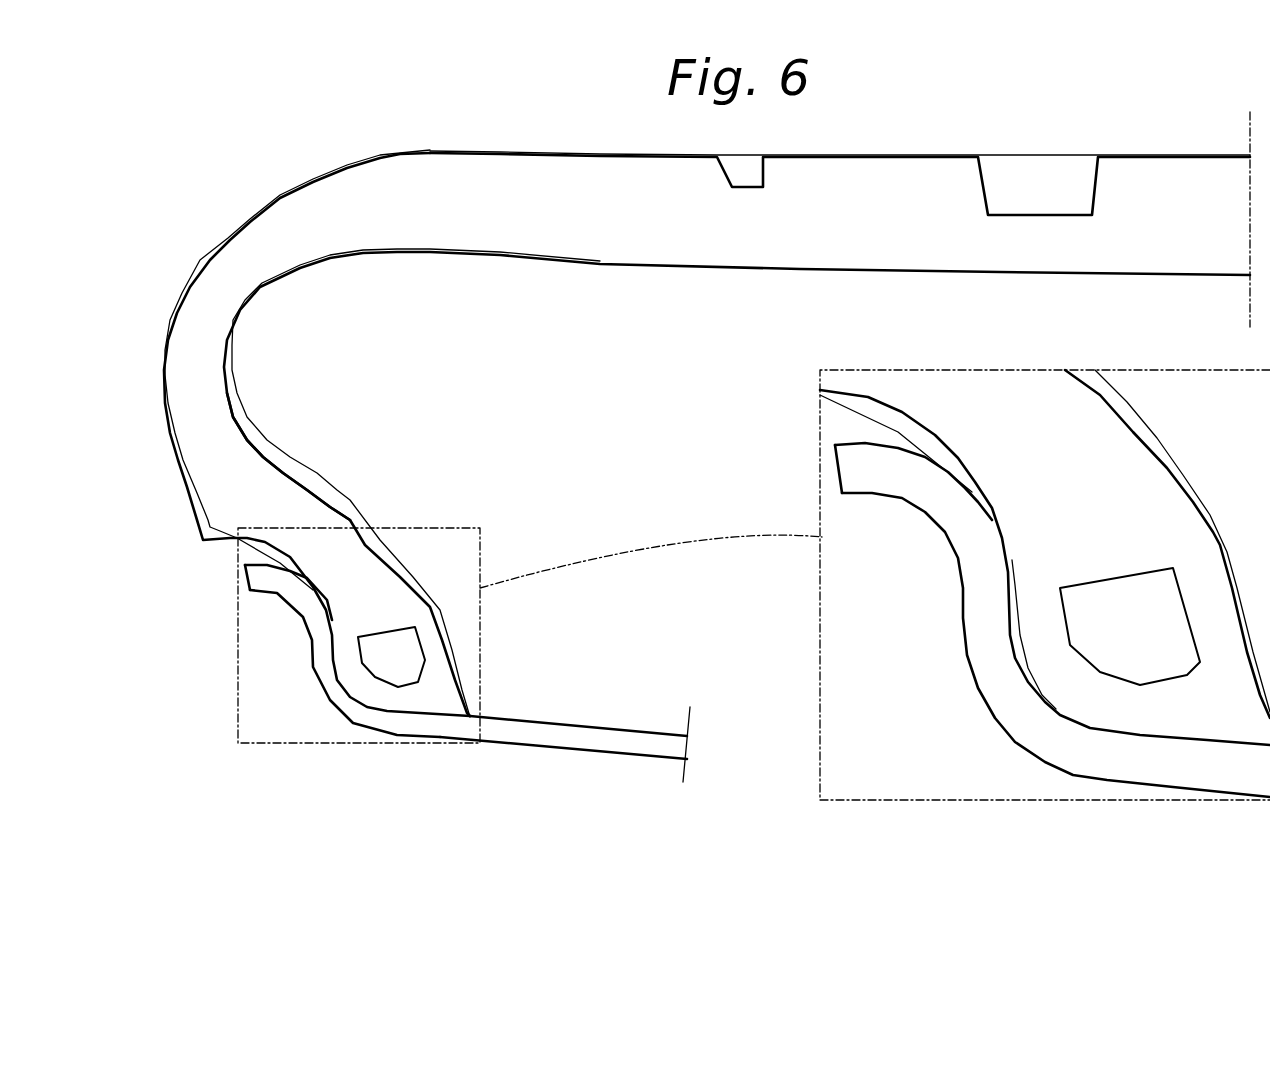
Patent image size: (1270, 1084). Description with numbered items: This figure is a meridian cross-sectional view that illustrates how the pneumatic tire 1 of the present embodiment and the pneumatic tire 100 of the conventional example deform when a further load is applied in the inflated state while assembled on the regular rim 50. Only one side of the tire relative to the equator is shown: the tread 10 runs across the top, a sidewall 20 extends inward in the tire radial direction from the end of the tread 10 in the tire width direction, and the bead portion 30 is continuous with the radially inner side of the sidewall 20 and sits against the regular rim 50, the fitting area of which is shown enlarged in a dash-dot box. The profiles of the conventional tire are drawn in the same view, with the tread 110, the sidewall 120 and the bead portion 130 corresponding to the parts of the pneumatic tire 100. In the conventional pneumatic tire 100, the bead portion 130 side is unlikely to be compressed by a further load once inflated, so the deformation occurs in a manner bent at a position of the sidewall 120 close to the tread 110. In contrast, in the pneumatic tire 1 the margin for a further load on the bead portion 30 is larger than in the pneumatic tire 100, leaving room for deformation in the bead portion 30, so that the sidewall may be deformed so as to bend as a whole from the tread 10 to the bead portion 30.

The pneumatic tire 1 is at (175, 455).
The tread 10 is at (573, 140).
The sidewall 20 is at (257, 245).
The bead portion 30 is at (217, 573).
The regular rim 50 is at (628, 750).
The pneumatic tire 100 is at (260, 435).
The tread 110 is at (423, 150).
The sidewall 120 is at (293, 288).
The bead portion 130 is at (347, 493).